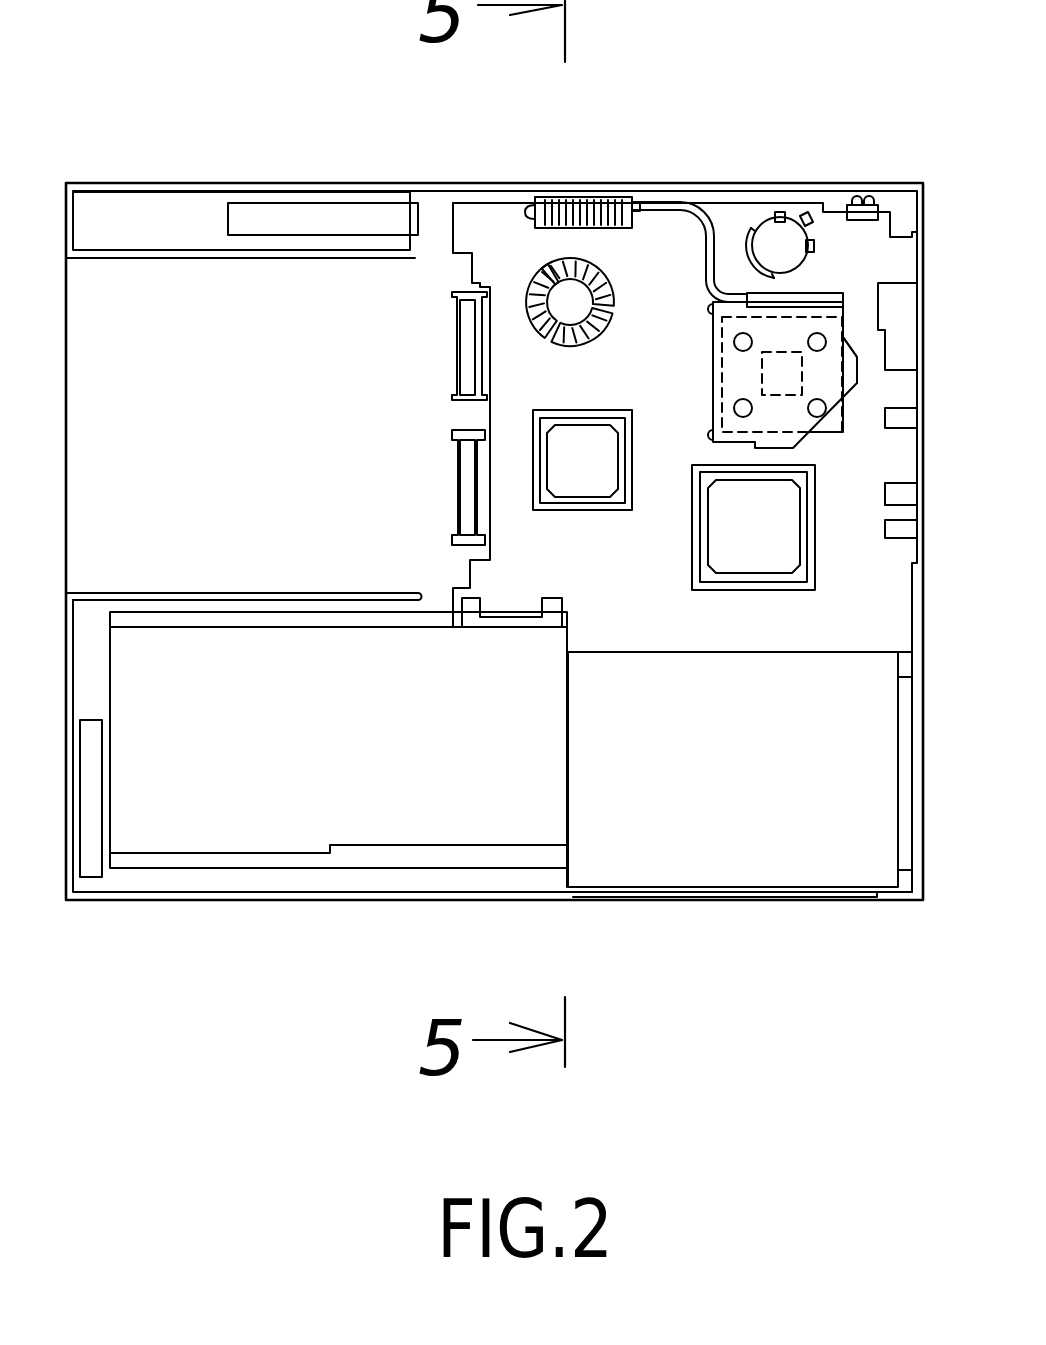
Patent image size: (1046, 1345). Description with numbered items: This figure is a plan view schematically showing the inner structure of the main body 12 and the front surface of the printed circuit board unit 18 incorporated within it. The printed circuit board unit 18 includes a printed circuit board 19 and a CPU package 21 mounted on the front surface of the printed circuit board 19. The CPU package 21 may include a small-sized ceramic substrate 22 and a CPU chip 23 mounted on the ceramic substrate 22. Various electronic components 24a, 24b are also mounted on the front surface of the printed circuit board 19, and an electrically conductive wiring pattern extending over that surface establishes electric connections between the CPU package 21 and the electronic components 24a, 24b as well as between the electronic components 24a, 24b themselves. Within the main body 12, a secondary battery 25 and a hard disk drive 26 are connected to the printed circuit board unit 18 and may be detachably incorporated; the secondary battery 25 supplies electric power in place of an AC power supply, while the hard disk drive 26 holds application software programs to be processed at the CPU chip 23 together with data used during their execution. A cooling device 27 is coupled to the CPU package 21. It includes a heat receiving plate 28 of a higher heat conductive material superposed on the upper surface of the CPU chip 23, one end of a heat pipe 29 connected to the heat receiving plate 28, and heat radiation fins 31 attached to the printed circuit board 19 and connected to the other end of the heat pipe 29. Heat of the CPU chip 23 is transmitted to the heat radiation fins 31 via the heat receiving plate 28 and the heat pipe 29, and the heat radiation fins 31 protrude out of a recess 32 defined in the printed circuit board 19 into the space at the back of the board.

The main body 12 is at (188, 184).
The printed circuit board unit 18 is at (455, 377).
The printed circuit board 19 is at (495, 413).
The CPU package 21 is at (840, 437).
The ceramic substrate 22 is at (716, 349).
The CPU chip 23 is at (762, 378).
The electronic component 24a is at (590, 485).
The electronic component 24b is at (752, 572).
The secondary battery 25 is at (283, 835).
The hard disk drive 26 is at (692, 865).
The cooling device 27 is at (682, 205).
The heat receiving plate 28 is at (852, 338).
The heat pipe 29 is at (717, 224).
The heat radiation fins 31 is at (583, 197).
The recess 32 is at (643, 214).